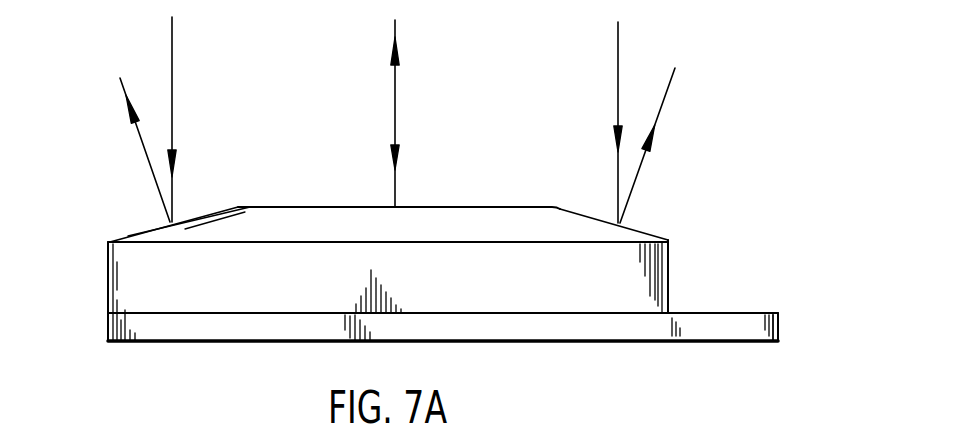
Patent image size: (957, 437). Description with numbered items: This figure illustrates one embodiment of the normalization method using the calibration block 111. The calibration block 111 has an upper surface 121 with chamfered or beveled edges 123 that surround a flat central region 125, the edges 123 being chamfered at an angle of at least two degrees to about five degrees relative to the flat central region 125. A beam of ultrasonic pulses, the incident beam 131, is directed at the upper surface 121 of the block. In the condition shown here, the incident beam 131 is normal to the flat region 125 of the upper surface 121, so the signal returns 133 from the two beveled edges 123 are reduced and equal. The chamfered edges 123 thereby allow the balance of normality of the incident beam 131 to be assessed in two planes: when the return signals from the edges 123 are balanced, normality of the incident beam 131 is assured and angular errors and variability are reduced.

The calibration block 111 is at (718, 265).
The upper surface 121 is at (265, 152).
The chamfered edges 123 is at (140, 231).
The flat central region 125 is at (470, 207).
The incident beam 131 is at (397, 88).
The signal returns 133 is at (138, 137).